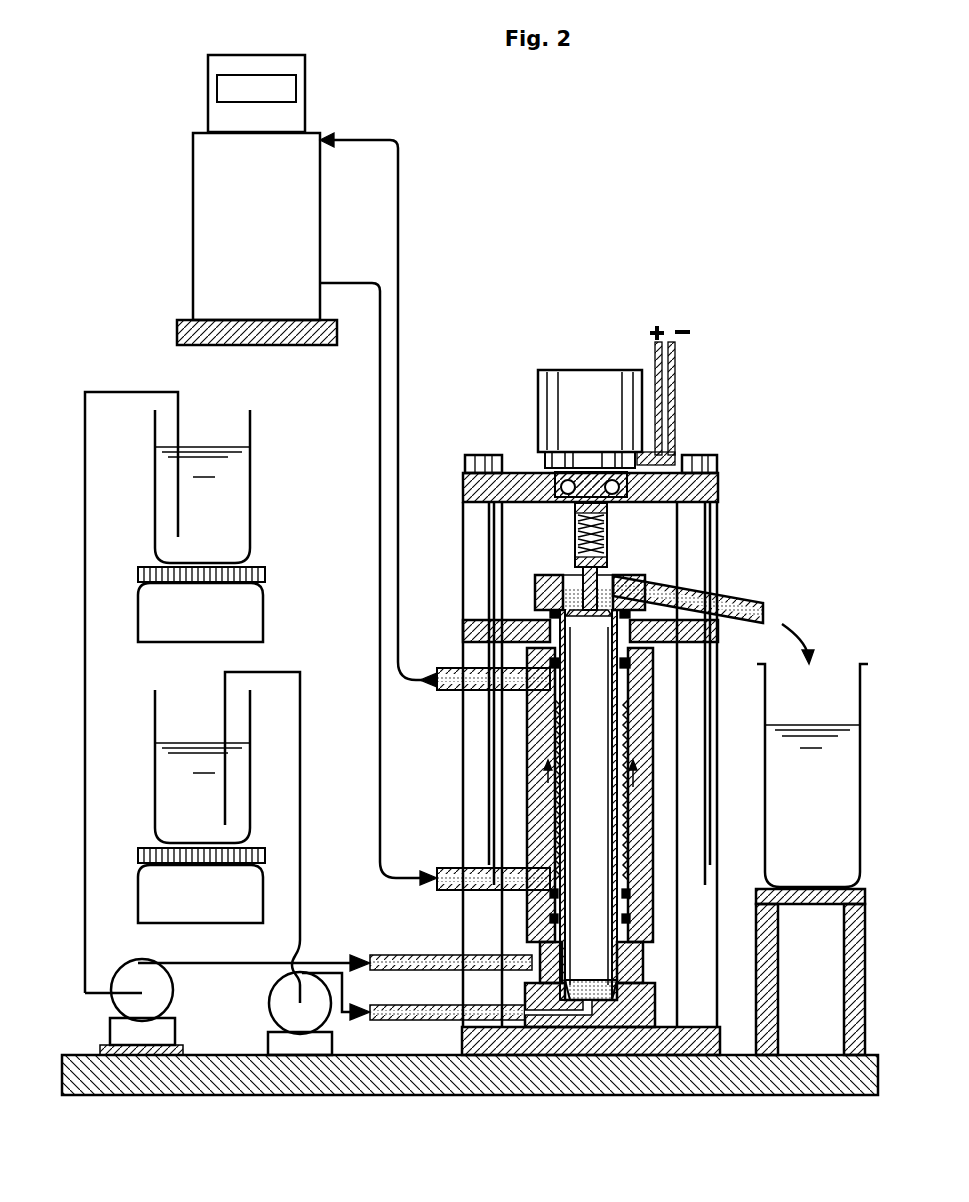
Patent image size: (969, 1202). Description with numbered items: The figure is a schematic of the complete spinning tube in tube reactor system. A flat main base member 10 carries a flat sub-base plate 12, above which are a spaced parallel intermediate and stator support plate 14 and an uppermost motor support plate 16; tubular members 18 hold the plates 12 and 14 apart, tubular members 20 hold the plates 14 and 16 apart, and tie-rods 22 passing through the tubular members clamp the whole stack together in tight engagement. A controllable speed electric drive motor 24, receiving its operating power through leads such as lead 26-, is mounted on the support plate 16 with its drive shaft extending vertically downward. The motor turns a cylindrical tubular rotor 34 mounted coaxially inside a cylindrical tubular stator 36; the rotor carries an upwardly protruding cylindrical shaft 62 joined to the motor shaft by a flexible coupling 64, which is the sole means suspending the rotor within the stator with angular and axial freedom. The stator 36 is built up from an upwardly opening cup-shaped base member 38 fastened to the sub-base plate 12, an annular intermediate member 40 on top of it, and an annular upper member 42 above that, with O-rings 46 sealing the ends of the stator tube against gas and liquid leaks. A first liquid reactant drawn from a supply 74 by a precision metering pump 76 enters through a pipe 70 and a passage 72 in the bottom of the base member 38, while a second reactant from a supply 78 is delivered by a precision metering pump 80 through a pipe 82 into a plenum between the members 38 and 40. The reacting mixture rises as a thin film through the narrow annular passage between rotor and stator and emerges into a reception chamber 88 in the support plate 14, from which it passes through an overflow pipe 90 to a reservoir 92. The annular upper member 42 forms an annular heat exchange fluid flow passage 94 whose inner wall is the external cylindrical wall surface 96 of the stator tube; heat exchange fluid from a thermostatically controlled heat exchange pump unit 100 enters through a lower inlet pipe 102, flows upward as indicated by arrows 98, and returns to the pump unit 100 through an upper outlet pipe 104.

The main base member 10 is at (415, 1083).
The sub-base plate 12 is at (622, 1040).
The intermediate and stator support plate 14 is at (478, 635).
The uppermost and motor support plate 16 is at (478, 488).
The tubular members 18 is at (693, 665).
The tubular members 20 is at (477, 533).
The tie-rods 22 is at (483, 467).
The controllable speed electric drive motor 24 is at (538, 385).
The lead 26- is at (672, 360).
The cylindrical tubular rotor 34 is at (597, 723).
The cylindrical tubular stator 36 is at (625, 748).
The cup-shaped base member 38 is at (638, 998).
The annular intermediate member 40 is at (640, 928).
The annular upper member 42 is at (647, 775).
The O-rings 46 is at (532, 925).
The cylindrical shaft 62 is at (603, 578).
The flexible coupling 64 is at (608, 533).
The pipe 70 is at (448, 1018).
The passage 72 is at (558, 1012).
The supply 74 is at (152, 815).
The precision metering pump 76 is at (287, 1010).
The supply 78 is at (250, 532).
The precision metering pump 80 is at (155, 985).
The pipe 82 is at (430, 955).
The reception chamber 88 is at (573, 578).
The overflow pipe 90 is at (725, 593).
The reservoir 92 is at (765, 700).
The heat exchange fluid flow passage 94 is at (548, 750).
The external cylindrical wall surface 96 is at (620, 833).
The arrows 98 is at (635, 787).
The heat exchange pump unit 100 is at (232, 237).
The lower inlet pipe 102 is at (455, 867).
The upper outlet pipe 104 is at (457, 690).